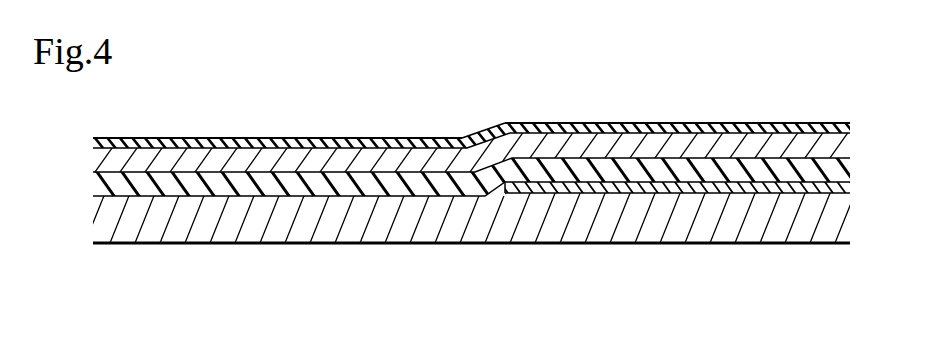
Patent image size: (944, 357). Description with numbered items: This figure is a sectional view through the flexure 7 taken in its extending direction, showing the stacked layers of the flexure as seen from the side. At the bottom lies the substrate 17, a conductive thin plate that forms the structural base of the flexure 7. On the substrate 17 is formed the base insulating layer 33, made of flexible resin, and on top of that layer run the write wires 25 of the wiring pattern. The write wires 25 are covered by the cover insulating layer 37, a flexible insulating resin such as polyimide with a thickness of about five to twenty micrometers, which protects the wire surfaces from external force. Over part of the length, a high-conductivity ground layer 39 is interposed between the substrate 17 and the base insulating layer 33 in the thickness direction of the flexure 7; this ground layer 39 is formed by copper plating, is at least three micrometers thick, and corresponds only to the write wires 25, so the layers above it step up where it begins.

The flexure 7 is at (468, 98).
The substrate 17 is at (328, 230).
The write wires 25 is at (392, 147).
The base insulating layer 33 is at (388, 190).
The cover insulating layer 37 is at (308, 138).
The ground layer 39 is at (663, 190).